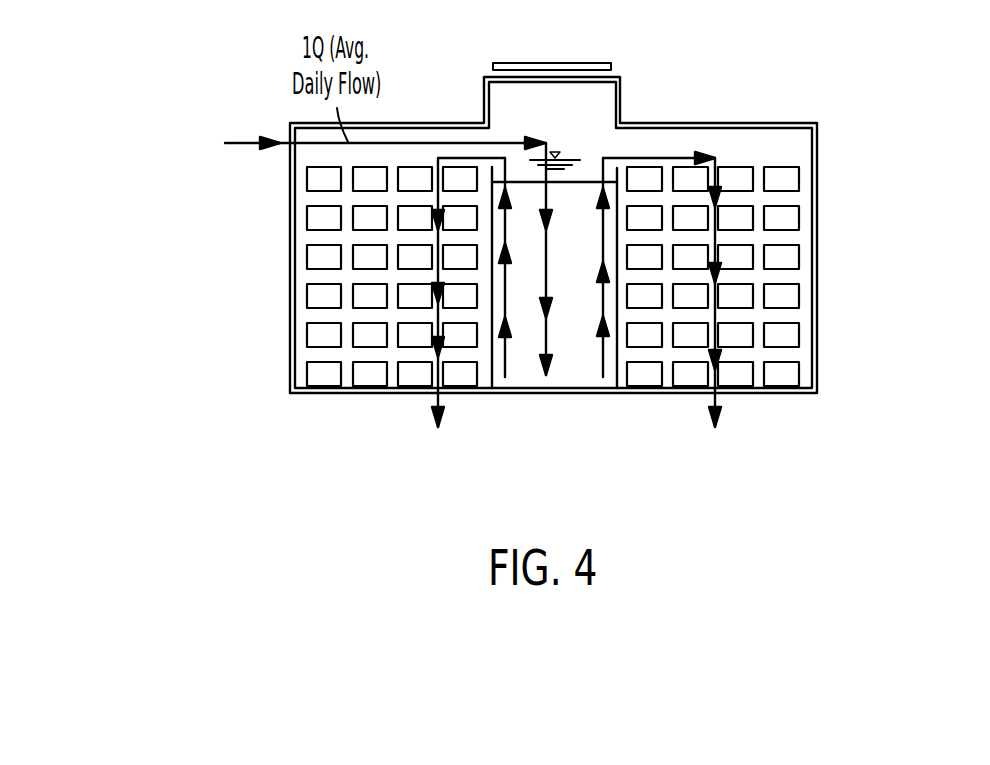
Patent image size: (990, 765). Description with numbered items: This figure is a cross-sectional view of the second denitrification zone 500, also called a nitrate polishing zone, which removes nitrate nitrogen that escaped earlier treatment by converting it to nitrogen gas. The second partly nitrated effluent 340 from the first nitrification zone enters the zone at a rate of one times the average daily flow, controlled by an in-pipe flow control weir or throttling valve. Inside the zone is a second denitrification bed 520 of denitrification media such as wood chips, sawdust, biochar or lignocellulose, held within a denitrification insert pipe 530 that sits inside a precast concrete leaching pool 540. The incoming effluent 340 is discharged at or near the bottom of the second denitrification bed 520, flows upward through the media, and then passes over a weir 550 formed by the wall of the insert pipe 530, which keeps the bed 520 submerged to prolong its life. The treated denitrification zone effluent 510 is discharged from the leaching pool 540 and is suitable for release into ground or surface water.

The second partly nitrated effluent 340 is at (245, 141).
The second denitrification zone 500 is at (432, 122).
The denitrification zone effluent 510 is at (438, 193).
The second denitrification bed 520 is at (587, 235).
The denitrification insert pipe 530 is at (492, 315).
The precast concrete leaching pool 540 is at (775, 280).
The weir 550 is at (618, 172).